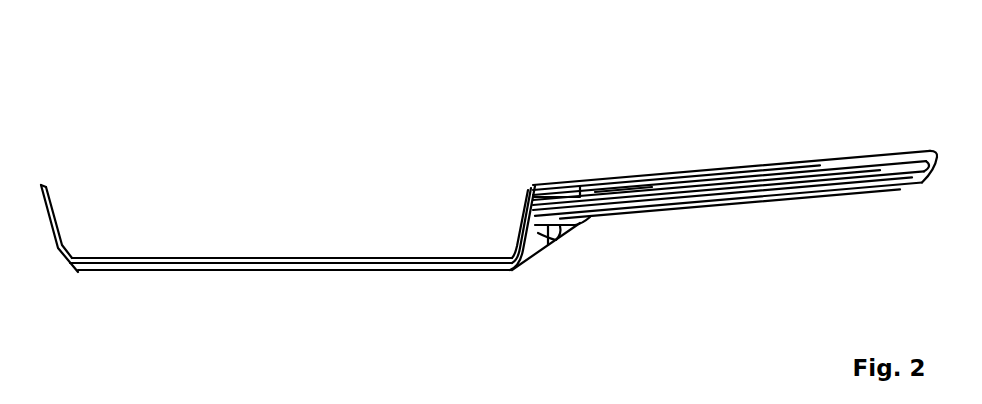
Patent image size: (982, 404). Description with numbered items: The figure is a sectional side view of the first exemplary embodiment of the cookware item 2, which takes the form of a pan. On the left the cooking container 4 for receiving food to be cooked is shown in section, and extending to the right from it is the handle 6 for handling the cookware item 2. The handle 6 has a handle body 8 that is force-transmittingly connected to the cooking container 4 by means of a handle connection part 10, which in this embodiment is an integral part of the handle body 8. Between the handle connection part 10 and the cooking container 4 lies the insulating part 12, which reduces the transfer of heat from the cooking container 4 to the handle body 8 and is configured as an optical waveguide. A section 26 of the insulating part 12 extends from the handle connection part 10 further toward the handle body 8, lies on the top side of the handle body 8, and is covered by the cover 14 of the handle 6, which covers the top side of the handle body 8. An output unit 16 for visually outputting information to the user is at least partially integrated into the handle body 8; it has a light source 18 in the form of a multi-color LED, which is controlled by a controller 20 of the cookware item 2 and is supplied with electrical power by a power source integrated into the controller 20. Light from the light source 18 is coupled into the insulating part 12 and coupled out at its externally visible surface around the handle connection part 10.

The cookware item 2 is at (62, 123).
The cooking container 4 is at (152, 262).
The handle 6 is at (648, 263).
The handle body 8 is at (752, 202).
The handle connection part 10 is at (542, 250).
The insulating part 12 is at (533, 187).
The cover 14 is at (768, 168).
The output unit 16 is at (455, 143).
The light source 18 is at (603, 190).
The controller 20 is at (660, 187).
The section 26 is at (575, 193).